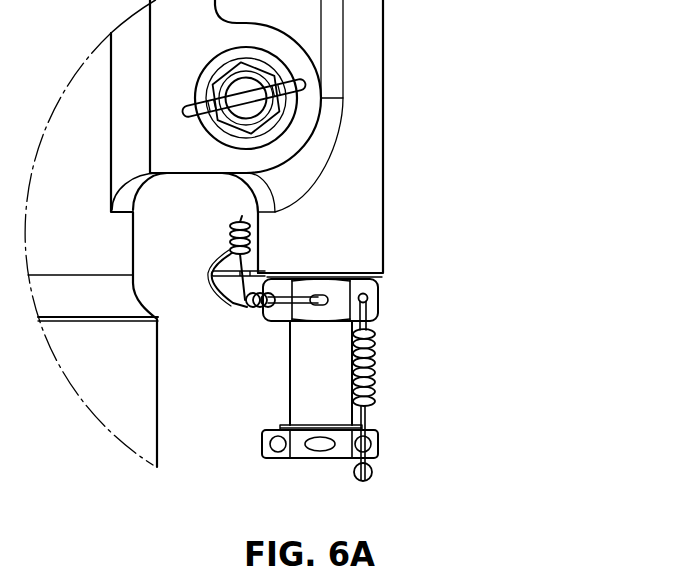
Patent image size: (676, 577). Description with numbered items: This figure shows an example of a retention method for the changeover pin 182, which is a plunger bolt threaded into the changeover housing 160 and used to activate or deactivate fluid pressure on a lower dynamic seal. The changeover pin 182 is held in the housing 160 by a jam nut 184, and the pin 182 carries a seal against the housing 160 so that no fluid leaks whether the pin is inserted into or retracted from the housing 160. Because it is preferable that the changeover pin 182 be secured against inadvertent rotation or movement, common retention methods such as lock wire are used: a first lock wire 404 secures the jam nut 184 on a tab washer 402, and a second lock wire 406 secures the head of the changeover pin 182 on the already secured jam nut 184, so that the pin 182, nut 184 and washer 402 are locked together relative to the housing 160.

The changeover housing 160 is at (383, 118).
The tab washer 402 is at (380, 273).
The lock wire 404 is at (216, 305).
The jam nut 184 is at (378, 305).
The lock wire 406 is at (375, 377).
The changeover pin 182 is at (290, 363).